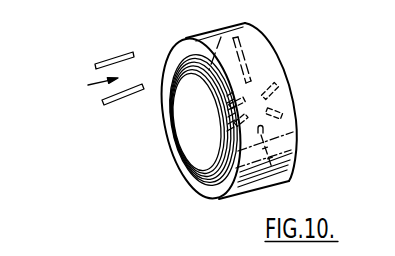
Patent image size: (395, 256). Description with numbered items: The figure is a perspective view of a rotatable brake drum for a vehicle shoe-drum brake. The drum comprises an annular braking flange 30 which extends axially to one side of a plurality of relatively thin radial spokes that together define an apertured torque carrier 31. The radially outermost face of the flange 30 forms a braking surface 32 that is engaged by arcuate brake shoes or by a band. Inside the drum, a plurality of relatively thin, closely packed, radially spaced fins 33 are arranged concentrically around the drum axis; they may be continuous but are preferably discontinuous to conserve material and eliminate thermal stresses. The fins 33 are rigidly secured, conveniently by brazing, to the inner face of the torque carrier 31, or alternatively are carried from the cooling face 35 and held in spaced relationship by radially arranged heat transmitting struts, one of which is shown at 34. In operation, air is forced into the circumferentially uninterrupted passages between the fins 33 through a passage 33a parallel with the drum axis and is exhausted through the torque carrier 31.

The annular braking flange 30 is at (208, 196).
The apertured torque carrier 31 is at (268, 78).
The braking surface 32 is at (213, 53).
The fins 33 is at (183, 144).
The passage 33a is at (100, 48).
The heat transmitting strut 34 is at (177, 67).
The cooling face 35 is at (170, 133).